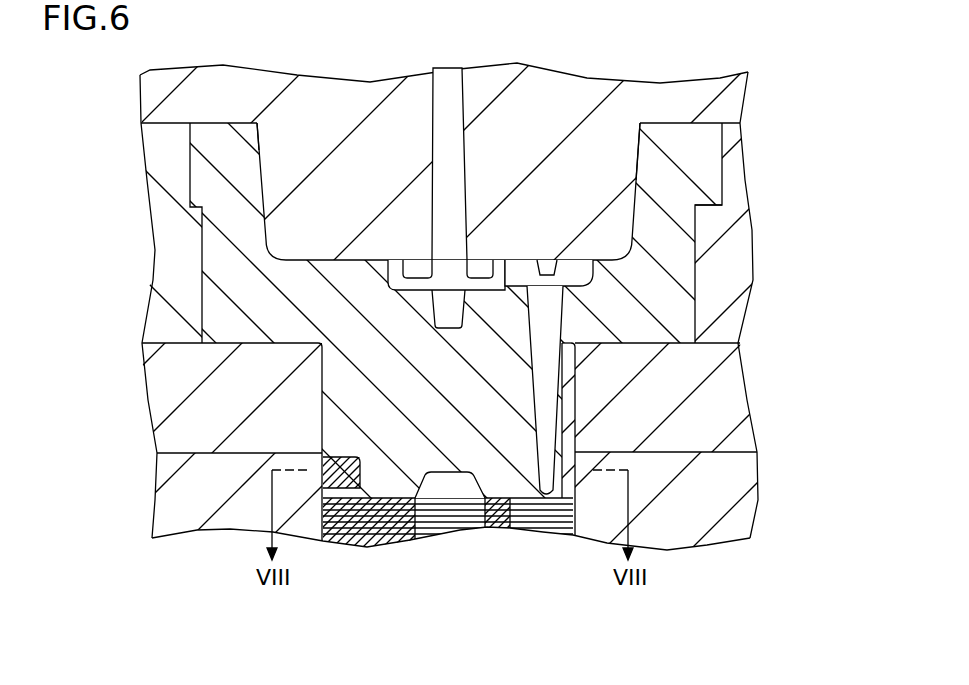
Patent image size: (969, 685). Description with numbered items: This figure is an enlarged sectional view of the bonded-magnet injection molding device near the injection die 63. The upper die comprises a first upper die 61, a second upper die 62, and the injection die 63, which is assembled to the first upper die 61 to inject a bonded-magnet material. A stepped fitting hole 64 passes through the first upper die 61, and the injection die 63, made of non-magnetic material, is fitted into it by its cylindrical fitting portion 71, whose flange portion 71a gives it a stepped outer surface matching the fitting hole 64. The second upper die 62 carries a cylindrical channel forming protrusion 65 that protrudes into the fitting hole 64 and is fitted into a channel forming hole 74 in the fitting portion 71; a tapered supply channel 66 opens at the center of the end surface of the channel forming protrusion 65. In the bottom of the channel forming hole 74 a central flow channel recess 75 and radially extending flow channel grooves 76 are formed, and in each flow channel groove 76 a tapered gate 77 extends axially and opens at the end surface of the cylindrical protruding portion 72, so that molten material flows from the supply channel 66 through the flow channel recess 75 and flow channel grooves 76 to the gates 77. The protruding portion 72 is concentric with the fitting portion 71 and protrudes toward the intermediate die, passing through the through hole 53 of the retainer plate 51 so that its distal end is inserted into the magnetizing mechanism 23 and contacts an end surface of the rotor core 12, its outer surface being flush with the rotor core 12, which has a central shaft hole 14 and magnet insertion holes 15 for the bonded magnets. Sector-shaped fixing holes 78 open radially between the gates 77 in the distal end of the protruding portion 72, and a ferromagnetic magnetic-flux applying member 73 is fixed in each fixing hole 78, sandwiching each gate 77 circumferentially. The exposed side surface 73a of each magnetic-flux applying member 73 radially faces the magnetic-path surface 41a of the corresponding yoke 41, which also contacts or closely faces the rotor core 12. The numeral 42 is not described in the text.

The rotor core 12 is at (437, 494).
The shaft hole 14 is at (420, 522).
The magnet insertion hole 15 is at (508, 512).
The magnetizing mechanism 23 is at (745, 540).
The yoke 41 is at (170, 533).
The magnetic-path surface 41a is at (324, 486).
The lower mold block 42 is at (752, 468).
The retainer plate 51 is at (742, 397).
The through hole 53 is at (326, 365).
The first upper die 61 is at (745, 305).
The second upper die 62 is at (745, 103).
The injection die 63 is at (187, 116).
The fitting hole 64 is at (697, 223).
The channel forming protrusion 65 is at (630, 160).
The supply channel 66 is at (462, 160).
The fitting portion 71 is at (690, 262).
The flange portion 71a is at (720, 184).
The protruding portion 72 is at (568, 423).
The magnetic-flux applying member 73 is at (338, 460).
The side surface 73a is at (323, 458).
The channel forming hole 74 is at (262, 141).
The flow channel recess 75 is at (393, 273).
The flow channel groove 76 is at (600, 276).
The gate 77 is at (530, 350).
The fixing hole 78 is at (344, 489).